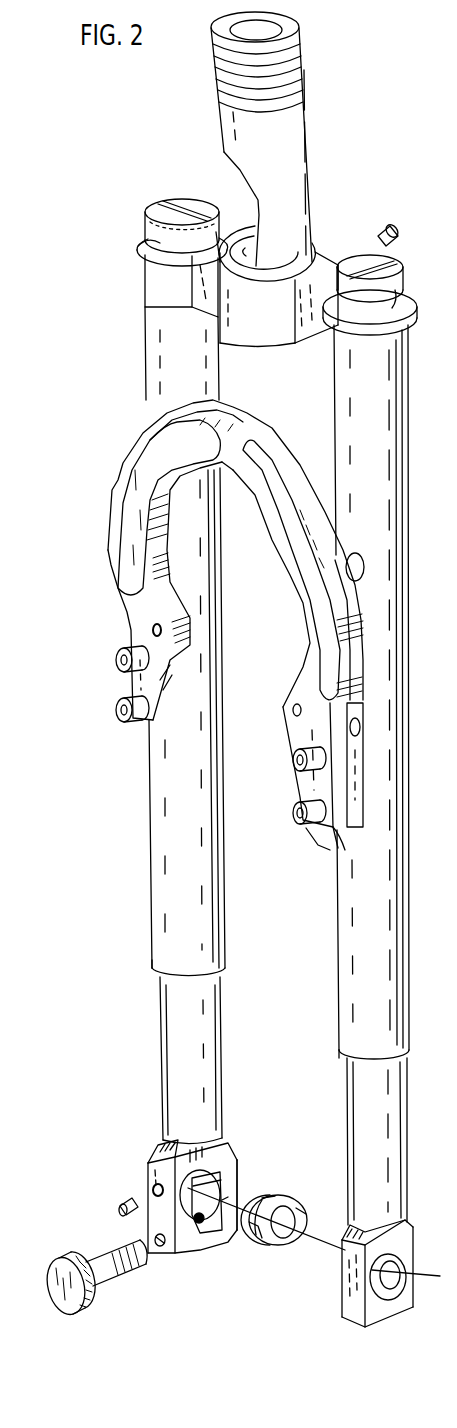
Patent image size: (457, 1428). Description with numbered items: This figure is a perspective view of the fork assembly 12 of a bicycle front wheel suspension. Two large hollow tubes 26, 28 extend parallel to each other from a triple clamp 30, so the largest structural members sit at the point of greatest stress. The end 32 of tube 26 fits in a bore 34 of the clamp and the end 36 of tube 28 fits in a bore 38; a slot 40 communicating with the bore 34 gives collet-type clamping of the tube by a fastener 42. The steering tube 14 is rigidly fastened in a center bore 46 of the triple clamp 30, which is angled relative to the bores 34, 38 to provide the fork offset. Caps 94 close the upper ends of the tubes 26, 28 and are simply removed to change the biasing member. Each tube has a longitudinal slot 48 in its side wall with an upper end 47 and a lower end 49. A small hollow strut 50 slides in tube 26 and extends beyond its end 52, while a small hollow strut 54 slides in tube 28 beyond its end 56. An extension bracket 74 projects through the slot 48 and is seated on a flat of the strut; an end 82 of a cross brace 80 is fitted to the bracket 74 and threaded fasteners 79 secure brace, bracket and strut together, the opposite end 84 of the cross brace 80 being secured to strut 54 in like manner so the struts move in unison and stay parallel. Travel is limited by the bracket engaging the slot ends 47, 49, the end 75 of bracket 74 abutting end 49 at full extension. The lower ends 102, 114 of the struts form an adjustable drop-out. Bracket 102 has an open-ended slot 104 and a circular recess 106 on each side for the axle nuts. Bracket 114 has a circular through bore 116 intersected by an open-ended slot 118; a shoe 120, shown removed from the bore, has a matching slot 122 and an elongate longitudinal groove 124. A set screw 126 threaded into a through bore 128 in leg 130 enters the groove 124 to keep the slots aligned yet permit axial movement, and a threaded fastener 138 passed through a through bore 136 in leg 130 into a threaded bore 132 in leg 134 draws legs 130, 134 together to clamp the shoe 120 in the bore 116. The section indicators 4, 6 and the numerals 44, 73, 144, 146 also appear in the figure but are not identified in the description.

The fork assembly 12 is at (118, 197).
The steering tube 14 is at (305, 130).
The section line 4- 4 is at (349, 134).
The section line 6- 6 is at (300, 753).
The large hollow tube 26 is at (402, 455).
The large hollow tube 28 is at (155, 372).
The triple clamp 30 is at (275, 322).
The end of tube 32 is at (394, 309).
The bore 34 is at (410, 305).
The end of tube 36 is at (140, 248).
The bore 38 is at (143, 267).
The slot 40 is at (345, 252).
The fastener 42 is at (386, 224).
The crown opening 44 is at (216, 230).
The center bore 46 is at (245, 255).
The upper end of slot 47 is at (362, 580).
The longitudinal slot 48 is at (353, 720).
The lower end of slot 49 is at (350, 828).
The small hollow strut 50 is at (402, 1098).
The end of tube 52 is at (410, 1033).
The small hollow strut 54 is at (160, 1007).
The end of tube 56 is at (152, 947).
The lug 73 is at (358, 737).
The extension bracket 74 is at (358, 783).
The end of bracket 75 is at (350, 820).
The threaded fasteners 79 is at (116, 658).
The cross brace 80 is at (233, 470).
The end of cross brace 82 is at (337, 828).
The opposite end of cross brace 84 is at (160, 717).
The caps 94 is at (147, 222).
The end of strut (shaped bracket) 102 is at (413, 1237).
The open ended slot 104 is at (387, 1297).
The circular recess 106 is at (405, 1273).
The end of strut (shaped bracket) 114 is at (234, 1153).
The circular through bore 116 is at (212, 1173).
The open ended slot 118 is at (203, 1232).
The shoe 120 is at (293, 1200).
The open ended slot 122 is at (287, 1237).
The elongate longitudinal groove 124 is at (260, 1243).
The set screw 126 is at (120, 1203).
The threaded through bore 128 is at (155, 1188).
The leg 130 is at (153, 1215).
The threaded bore 132 is at (193, 1222).
The leg 134 is at (223, 1232).
The through bore 136 is at (159, 1246).
The threaded fastener 138 is at (107, 1277).
The collar flange 144 is at (300, 1213).
The collar slot 146 is at (270, 1197).